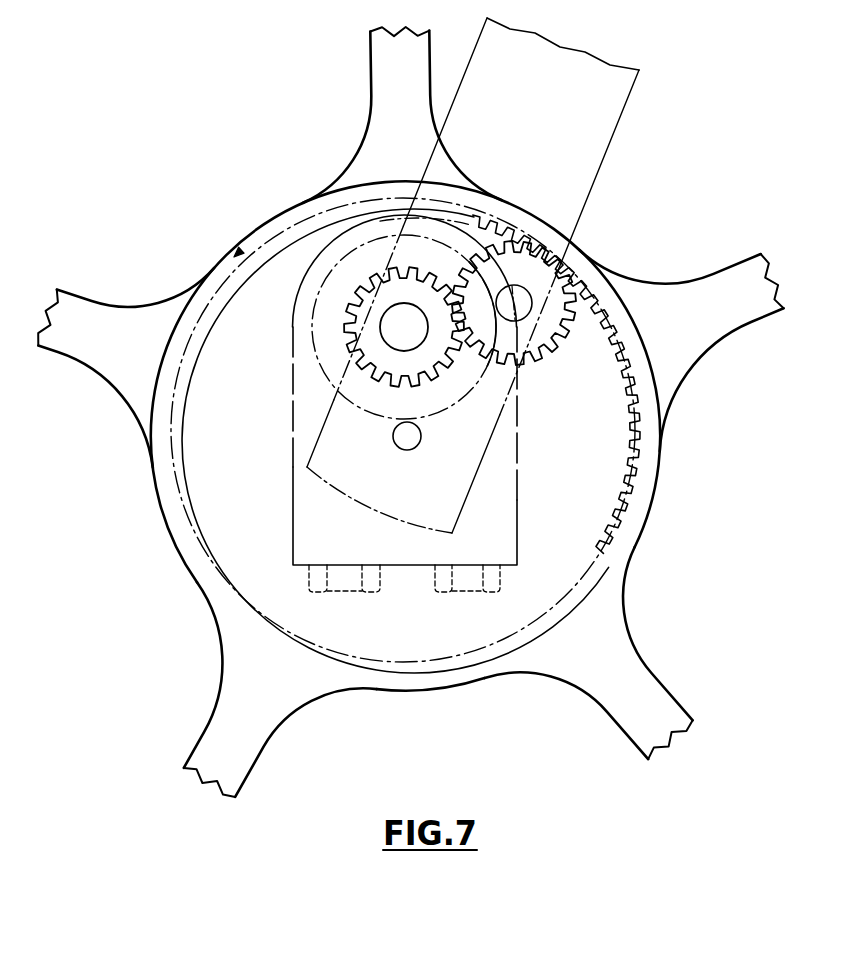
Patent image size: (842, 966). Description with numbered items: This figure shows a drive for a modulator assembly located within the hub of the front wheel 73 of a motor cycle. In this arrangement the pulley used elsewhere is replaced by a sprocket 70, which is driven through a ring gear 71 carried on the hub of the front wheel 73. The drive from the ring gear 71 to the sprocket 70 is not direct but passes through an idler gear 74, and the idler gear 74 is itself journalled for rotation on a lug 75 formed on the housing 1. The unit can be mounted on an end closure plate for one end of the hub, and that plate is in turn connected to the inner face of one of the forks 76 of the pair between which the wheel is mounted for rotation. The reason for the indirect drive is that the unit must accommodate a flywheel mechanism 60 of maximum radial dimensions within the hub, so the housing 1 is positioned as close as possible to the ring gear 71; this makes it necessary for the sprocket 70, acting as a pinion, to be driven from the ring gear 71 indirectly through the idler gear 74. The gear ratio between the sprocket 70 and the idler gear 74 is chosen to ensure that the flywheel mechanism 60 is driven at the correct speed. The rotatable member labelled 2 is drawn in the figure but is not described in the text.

The housing 1 is at (311, 359).
The rotatable ring 2 is at (632, 543).
The flywheel mechanism 60 is at (358, 265).
The sprocket 70 is at (302, 299).
The ring gear 71 is at (632, 482).
The front wheel 73 is at (246, 712).
The idler gear 74 is at (560, 318).
The lug 75 is at (520, 325).
The fork 76 is at (582, 166).